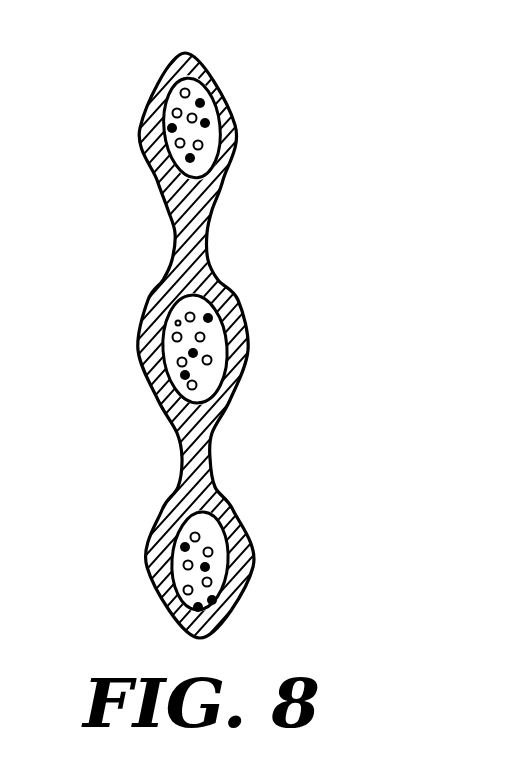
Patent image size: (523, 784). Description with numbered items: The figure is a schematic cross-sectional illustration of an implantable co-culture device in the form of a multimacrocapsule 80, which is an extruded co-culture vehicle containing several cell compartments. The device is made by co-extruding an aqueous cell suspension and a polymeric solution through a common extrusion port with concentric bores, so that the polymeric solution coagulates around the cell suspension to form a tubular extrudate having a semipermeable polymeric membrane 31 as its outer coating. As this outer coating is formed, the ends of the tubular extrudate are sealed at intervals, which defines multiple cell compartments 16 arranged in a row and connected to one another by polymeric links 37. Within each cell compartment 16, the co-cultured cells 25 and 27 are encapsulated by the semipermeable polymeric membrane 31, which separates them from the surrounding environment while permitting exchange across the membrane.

The multimacrocapsule 80 is at (145, 54).
The semipermeable polymeric membrane 31 is at (223, 73).
The cell compartment 16 is at (200, 144).
The polymeric link 37 is at (175, 235).
The cells 27 is at (213, 319).
The cells 25 is at (209, 363).